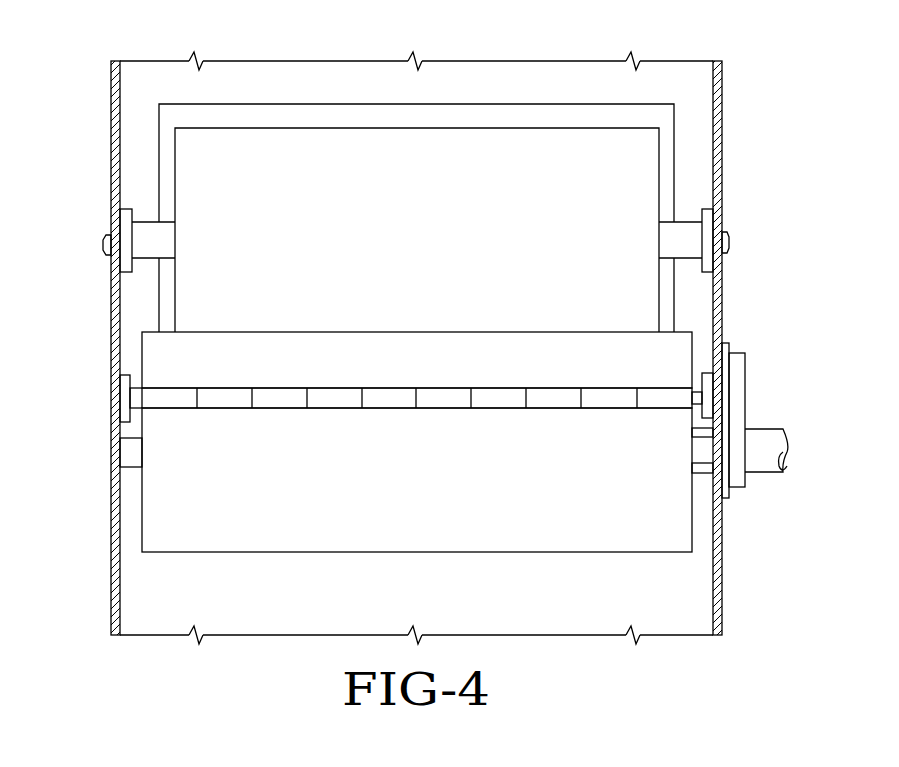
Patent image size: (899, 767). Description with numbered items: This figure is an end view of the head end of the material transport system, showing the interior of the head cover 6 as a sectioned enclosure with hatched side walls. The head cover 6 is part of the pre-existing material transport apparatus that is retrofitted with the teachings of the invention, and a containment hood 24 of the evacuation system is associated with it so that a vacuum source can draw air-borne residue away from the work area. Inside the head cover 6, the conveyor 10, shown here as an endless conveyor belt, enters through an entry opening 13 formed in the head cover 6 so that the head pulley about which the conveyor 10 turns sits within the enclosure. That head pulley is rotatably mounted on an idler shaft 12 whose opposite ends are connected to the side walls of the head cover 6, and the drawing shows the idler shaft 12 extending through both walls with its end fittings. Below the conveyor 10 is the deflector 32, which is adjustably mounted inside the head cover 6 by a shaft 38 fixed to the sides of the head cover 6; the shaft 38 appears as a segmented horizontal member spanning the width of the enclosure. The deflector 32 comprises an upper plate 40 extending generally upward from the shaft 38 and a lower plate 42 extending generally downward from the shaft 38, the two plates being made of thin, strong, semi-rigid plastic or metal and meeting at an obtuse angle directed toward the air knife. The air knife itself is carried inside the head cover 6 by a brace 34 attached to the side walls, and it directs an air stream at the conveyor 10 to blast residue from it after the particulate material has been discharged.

The head cover 6 is at (96, 177).
The containment hood 24 is at (111, 114).
The entry opening 13 is at (486, 107).
The conveyor 10 is at (273, 147).
The idler shaft 12 is at (150, 252).
The deflector 32 is at (411, 442).
The upper plate 40 is at (160, 357).
The shaft 38 is at (140, 400).
The brace 34 is at (130, 453).
The lower plate 42 is at (160, 495).